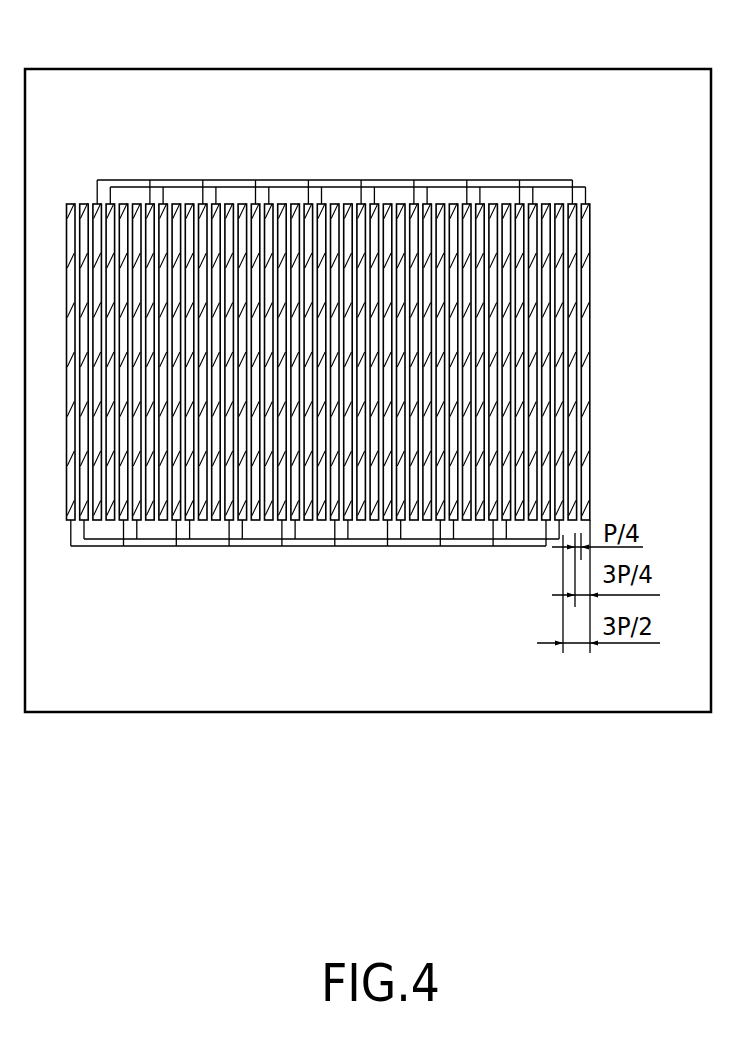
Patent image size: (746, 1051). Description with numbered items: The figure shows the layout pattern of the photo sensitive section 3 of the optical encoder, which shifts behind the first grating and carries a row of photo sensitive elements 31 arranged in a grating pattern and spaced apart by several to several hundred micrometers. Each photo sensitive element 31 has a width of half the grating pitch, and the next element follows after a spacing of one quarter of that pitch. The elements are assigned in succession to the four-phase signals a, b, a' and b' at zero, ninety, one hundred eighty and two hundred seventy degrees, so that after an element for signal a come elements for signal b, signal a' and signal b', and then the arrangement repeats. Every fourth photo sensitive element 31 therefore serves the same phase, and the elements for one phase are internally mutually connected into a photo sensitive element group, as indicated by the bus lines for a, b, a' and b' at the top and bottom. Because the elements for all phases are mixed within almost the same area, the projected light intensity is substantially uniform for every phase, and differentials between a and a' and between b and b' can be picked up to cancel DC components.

The photo sensitive section 3 is at (710, 70).
The photo sensitive elements 31 is at (587, 256).
The signal a is at (352, 168).
The signal b is at (339, 151).
The signal a/ a' is at (321, 555).
The signal b/ b' is at (308, 576).